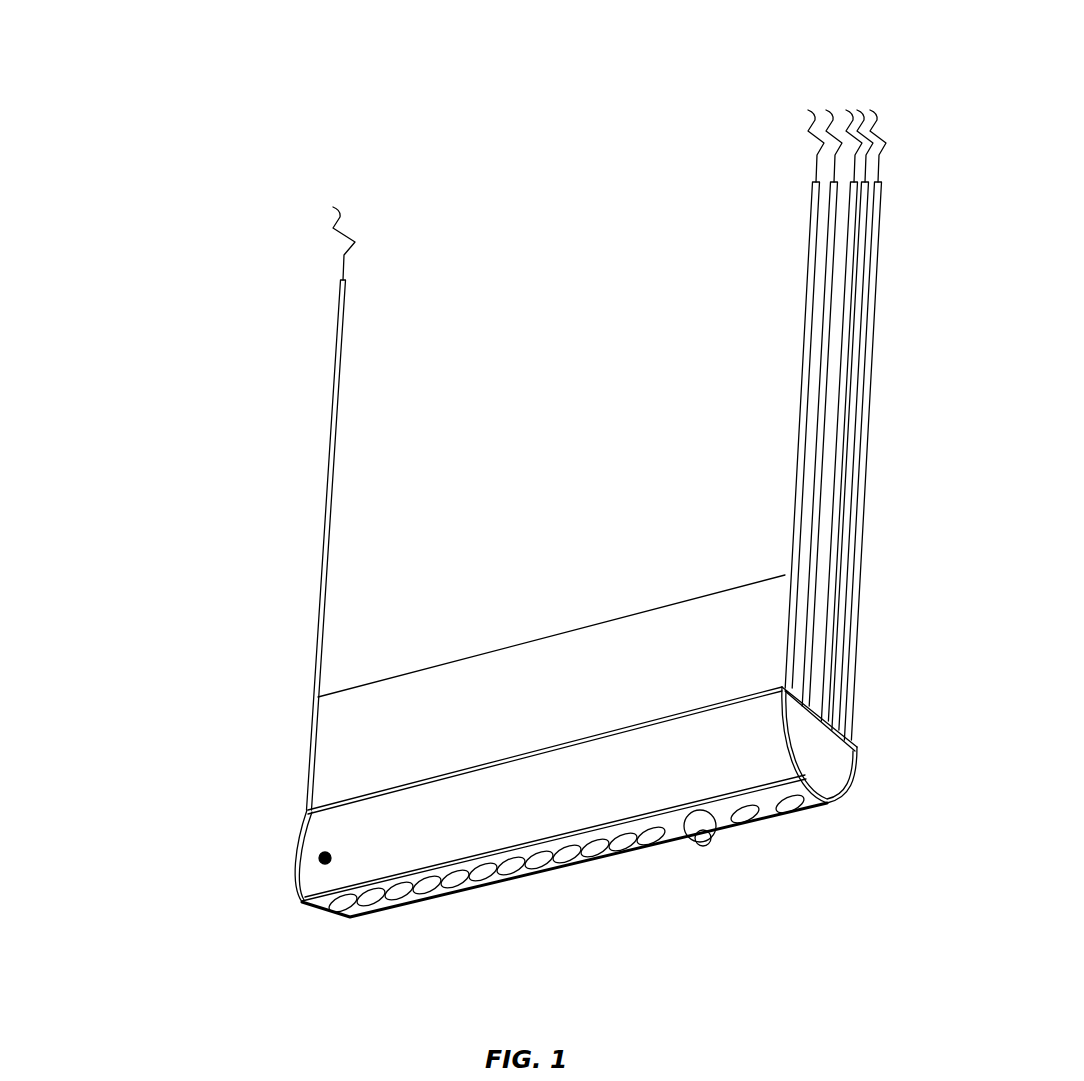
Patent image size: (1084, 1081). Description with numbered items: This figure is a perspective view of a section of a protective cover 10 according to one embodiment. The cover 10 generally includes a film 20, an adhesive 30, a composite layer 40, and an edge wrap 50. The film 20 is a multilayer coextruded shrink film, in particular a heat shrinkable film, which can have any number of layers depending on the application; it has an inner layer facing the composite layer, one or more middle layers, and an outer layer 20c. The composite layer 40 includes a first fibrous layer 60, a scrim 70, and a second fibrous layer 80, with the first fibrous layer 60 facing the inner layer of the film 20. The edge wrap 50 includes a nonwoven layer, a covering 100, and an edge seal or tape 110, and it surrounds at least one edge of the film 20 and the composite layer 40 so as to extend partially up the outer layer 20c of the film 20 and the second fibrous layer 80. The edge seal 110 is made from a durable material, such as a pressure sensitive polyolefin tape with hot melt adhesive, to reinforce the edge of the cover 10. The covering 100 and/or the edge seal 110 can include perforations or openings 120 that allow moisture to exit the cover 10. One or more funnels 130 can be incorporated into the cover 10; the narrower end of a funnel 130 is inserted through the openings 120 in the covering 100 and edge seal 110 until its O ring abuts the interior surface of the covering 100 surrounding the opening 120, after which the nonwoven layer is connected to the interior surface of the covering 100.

The protective cover 10 is at (150, 703).
The film 20 is at (808, 458).
The outer layer 20c is at (375, 340).
The adhesive 30 is at (827, 263).
The composite layer 40 is at (820, 93).
The edge wrap 50 is at (828, 825).
The first fibrous layer 60 is at (818, 563).
The scrim 70 is at (840, 507).
The second fibrous layer 80 is at (852, 467).
The covering 100 is at (360, 733).
The edge seal 110 is at (325, 858).
The openings 120 is at (567, 858).
The funnel 130 is at (693, 835).